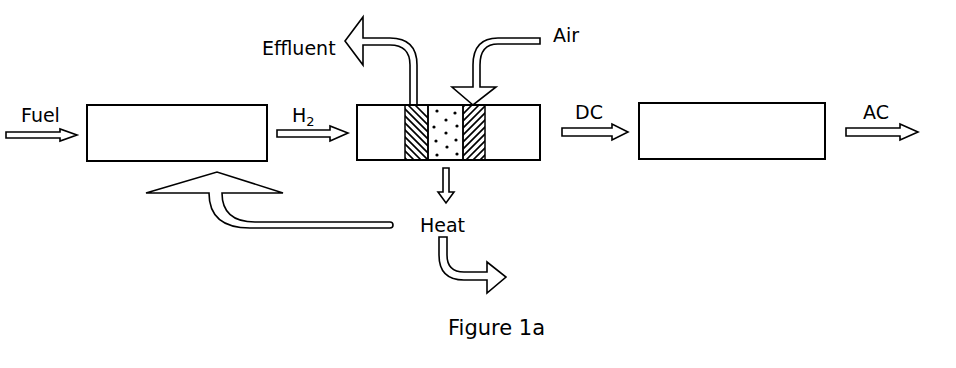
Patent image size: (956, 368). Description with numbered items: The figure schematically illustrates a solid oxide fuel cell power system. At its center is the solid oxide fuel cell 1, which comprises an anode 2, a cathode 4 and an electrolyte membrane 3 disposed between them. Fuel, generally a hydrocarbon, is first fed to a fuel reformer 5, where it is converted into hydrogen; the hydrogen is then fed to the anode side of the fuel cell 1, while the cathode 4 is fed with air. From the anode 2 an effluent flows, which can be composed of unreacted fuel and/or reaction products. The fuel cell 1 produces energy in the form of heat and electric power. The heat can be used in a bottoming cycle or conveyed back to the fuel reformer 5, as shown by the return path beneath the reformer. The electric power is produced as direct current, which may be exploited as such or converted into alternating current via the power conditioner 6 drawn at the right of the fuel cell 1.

The solid oxide fuel cell 1 is at (456, 162).
The anode 2 is at (415, 150).
The electrolyte membrane 3 is at (452, 150).
The cathode 4 is at (484, 118).
The fuel reformer 5 is at (122, 117).
The power conditioner 6 is at (710, 147).